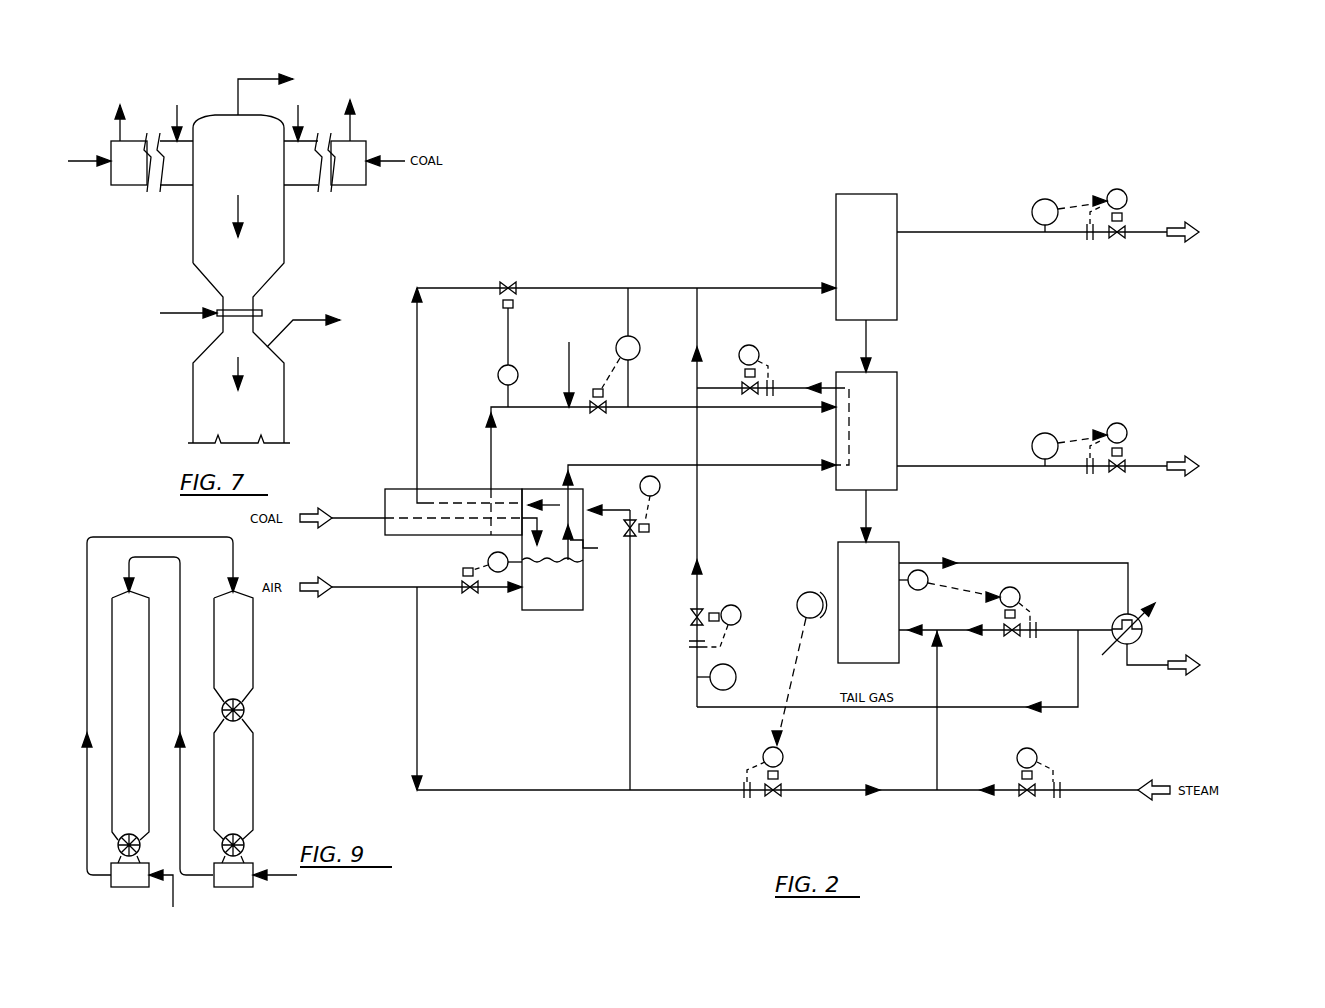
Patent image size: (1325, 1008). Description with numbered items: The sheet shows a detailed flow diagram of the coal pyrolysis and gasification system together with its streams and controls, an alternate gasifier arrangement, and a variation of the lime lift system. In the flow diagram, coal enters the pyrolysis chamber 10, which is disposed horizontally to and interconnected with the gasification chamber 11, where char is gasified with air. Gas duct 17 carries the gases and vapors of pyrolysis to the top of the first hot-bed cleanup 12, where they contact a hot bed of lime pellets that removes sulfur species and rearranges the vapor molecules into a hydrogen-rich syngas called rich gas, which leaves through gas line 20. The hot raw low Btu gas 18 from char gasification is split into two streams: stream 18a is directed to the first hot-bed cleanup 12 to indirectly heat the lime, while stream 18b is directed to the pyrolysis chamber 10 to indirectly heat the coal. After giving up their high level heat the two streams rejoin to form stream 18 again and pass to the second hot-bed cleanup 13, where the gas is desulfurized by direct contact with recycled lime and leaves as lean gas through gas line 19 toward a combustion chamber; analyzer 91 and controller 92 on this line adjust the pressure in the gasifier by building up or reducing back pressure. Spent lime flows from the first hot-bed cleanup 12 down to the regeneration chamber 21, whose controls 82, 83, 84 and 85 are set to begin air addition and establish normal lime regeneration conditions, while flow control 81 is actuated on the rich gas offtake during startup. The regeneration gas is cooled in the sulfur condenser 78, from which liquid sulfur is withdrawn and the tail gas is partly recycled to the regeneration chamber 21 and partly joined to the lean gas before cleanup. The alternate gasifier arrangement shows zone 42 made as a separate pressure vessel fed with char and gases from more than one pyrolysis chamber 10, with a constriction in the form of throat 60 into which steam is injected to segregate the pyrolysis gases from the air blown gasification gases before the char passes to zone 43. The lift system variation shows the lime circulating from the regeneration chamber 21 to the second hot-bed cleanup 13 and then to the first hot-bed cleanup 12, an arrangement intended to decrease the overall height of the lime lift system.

In FIG. 7, the pyrolysis chamber 10 is at (188, 174).
In FIG. 2, the pyrolysis chamber 10 is at (414, 513).
In FIG. 2, the gasification chamber 11 is at (558, 595).
In FIG. 9, the first hot-bed cleanup 12 is at (140, 722).
In FIG. 2, the first hot-bed cleanup 12 is at (882, 440).
In FIG. 9, the second hot-bed cleanup 13 is at (245, 787).
In FIG. 2, the second hot-bed cleanup 13 is at (878, 270).
In FIG. 7, the gas duct 17 is at (279, 92).
In FIG. 2, the gas duct 17 is at (491, 458).
In FIG. 2, the raw low Btu gas 18 is at (757, 272).
In FIG. 7, the low Btu gas stream 18a is at (322, 329).
In FIG. 2, the low Btu gas stream 18a is at (614, 466).
In FIG. 7, the low Btu gas stream 18b is at (124, 118).
In FIG. 2, the low Btu gas stream 18b is at (417, 479).
In FIG. 2, the gas line 19 is at (972, 219).
In FIG. 2, the gas line 20 is at (969, 467).
In FIG. 9, the regeneration chamber 21 is at (245, 657).
In FIG. 2, the regeneration chamber 21 is at (878, 614).
In FIG. 7, the zone 42 is at (250, 187).
In FIG. 7, the zone 43 is at (245, 416).
In FIG. 7, the throat 60 is at (268, 310).
In FIG. 2, the sulfur condenser 78 is at (1145, 626).
In FIG. 2, the flow control 81 is at (1040, 434).
In FIG. 2, the control 82 is at (1016, 596).
In FIG. 2, the control 83 is at (919, 590).
In FIG. 2, the control 84 is at (807, 592).
In FIG. 2, the control 85 is at (765, 752).
In FIG. 2, the analyzer 91 is at (1055, 178).
In FIG. 2, the controller 92 is at (1128, 178).